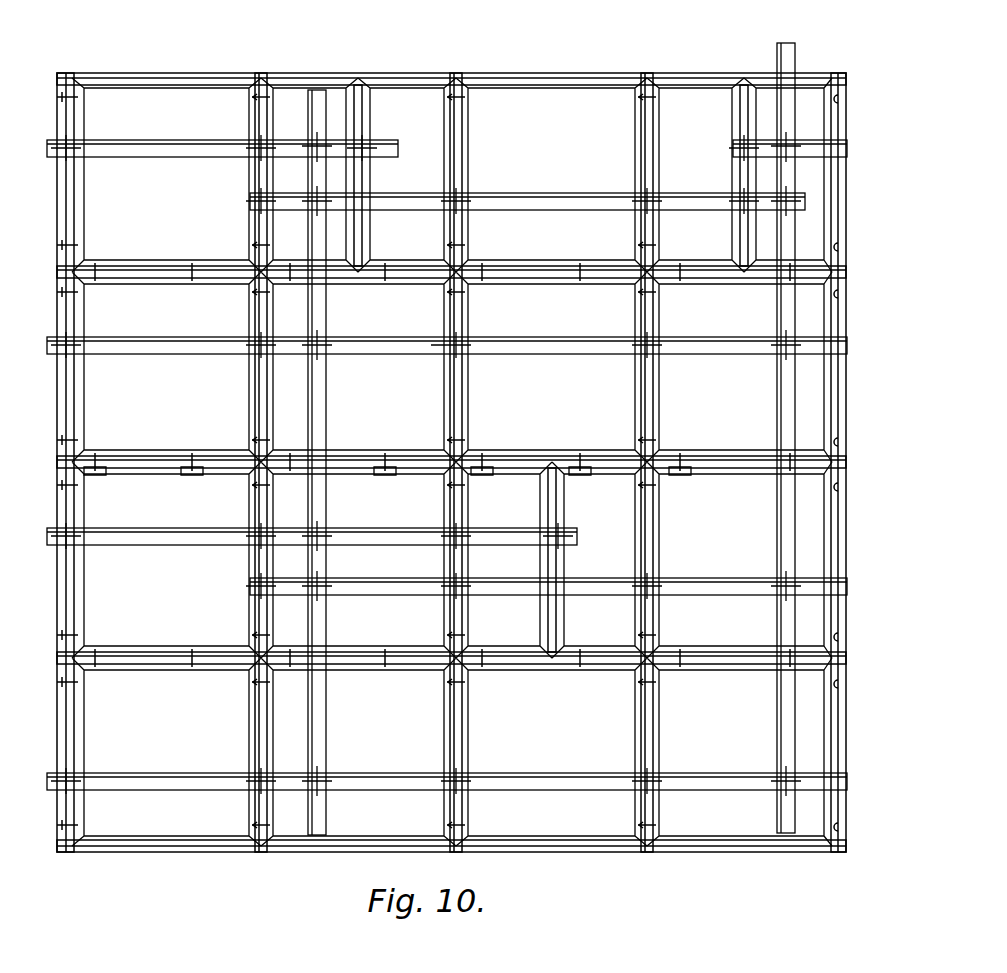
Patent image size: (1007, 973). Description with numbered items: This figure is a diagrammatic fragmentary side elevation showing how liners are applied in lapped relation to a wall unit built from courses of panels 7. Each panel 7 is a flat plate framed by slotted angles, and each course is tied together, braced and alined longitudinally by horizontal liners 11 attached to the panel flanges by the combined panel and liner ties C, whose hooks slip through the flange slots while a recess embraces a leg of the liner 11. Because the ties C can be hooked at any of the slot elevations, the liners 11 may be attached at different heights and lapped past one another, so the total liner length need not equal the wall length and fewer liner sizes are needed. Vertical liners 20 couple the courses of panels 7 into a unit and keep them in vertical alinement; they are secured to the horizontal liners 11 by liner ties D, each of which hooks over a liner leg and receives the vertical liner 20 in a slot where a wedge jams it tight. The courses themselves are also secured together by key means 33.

The panel 7 is at (452, 462).
The liner 11 is at (354, 560).
The vertical liner 20 is at (778, 405).
The key means 33 is at (672, 466).
The combined panel and liner tie C is at (456, 778).
The liner tie D is at (783, 759).